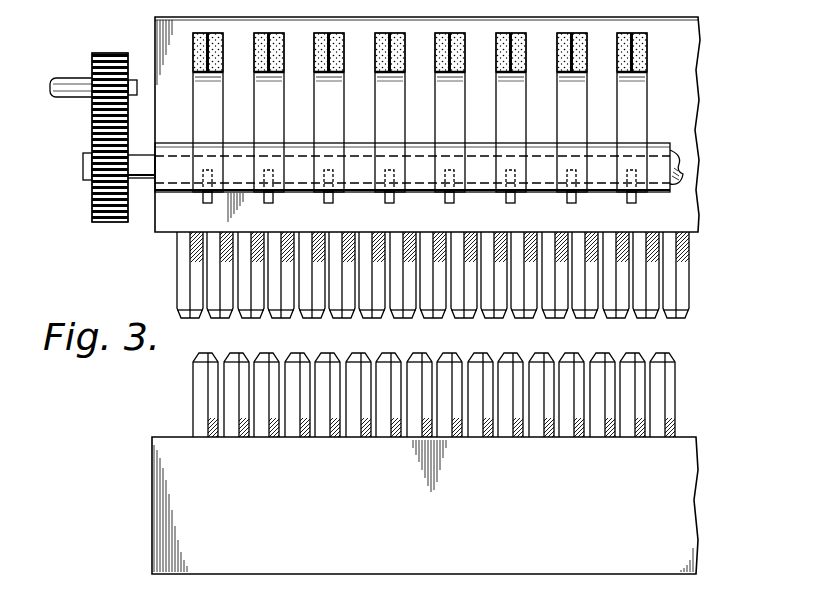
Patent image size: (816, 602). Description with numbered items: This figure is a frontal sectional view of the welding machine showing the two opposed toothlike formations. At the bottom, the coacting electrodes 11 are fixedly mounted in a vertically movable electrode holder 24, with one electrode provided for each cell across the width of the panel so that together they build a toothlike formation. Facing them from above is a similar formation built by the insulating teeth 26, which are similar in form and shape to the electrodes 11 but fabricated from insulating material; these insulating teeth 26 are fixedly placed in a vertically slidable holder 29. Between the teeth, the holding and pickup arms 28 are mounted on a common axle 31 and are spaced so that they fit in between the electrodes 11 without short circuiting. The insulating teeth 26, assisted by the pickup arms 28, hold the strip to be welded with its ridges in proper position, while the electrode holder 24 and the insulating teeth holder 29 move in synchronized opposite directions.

The coacting electrodes 11 is at (228, 395).
The electrode holder 24 is at (682, 468).
The insulating teeth 26 is at (213, 280).
The holding and pickup arm 28 is at (580, 113).
The insulating teeth holder 29 is at (690, 129).
The common axle 31 is at (683, 181).